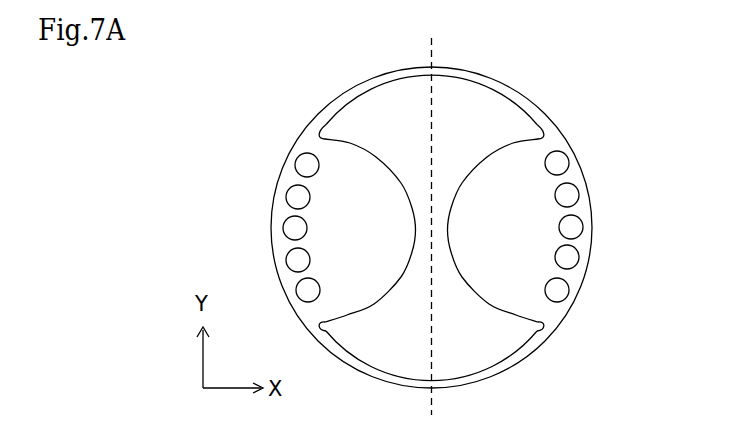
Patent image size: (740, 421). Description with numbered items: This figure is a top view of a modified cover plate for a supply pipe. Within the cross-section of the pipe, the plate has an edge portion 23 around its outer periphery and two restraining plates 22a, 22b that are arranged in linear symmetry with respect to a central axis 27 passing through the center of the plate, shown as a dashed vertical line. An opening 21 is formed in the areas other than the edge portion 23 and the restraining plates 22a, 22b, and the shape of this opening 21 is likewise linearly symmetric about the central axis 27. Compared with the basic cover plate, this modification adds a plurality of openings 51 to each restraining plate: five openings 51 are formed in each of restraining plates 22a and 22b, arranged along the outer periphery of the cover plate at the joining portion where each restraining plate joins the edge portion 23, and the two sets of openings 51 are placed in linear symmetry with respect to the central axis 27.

The opening 21 is at (509, 110).
The restraining plate 22a is at (498, 194).
The restraining plate 22b is at (332, 198).
The edge portion 23 is at (515, 360).
The central axis 27 is at (431, 53).
The openings 51 is at (288, 230).